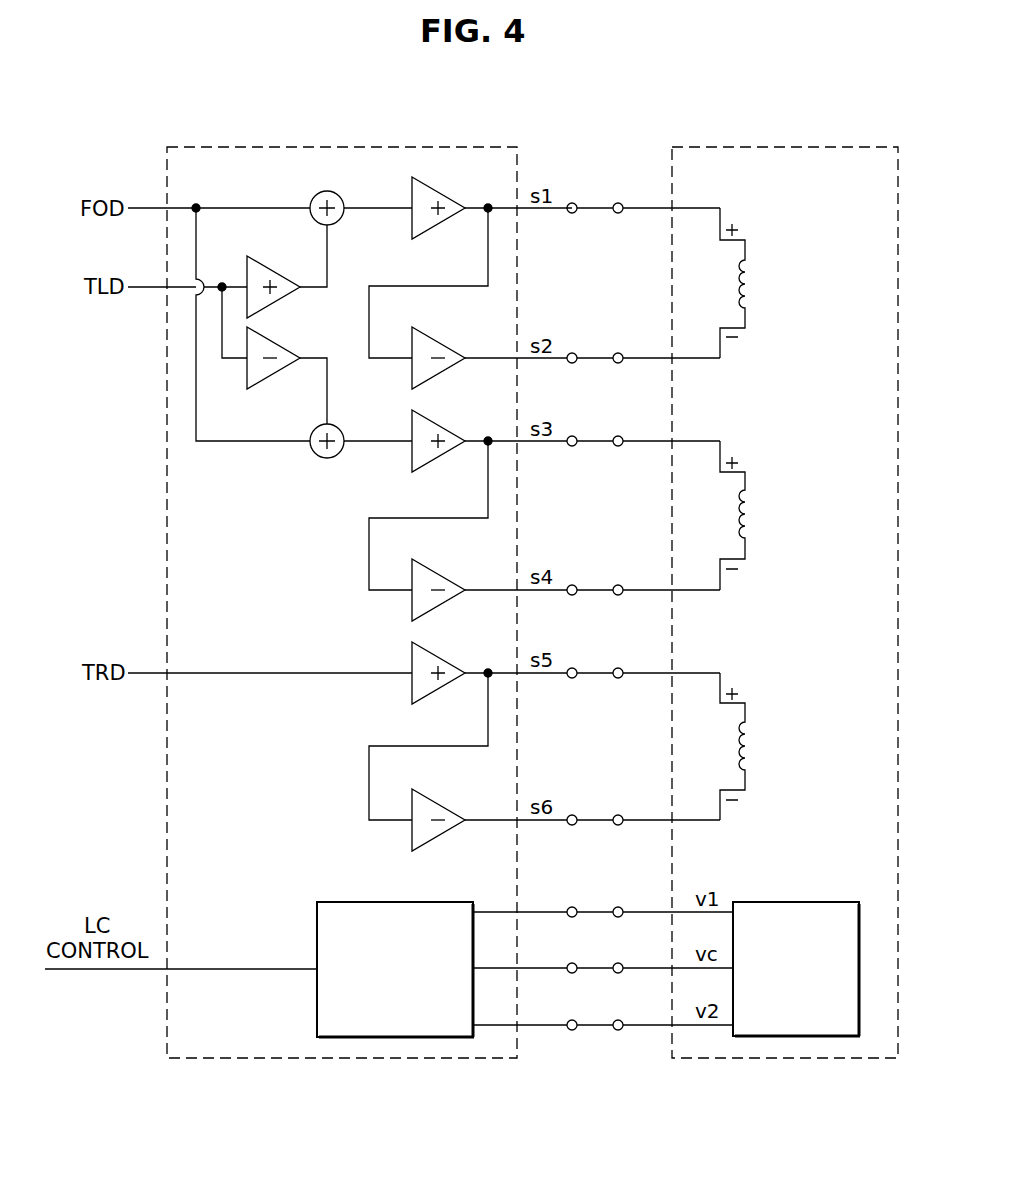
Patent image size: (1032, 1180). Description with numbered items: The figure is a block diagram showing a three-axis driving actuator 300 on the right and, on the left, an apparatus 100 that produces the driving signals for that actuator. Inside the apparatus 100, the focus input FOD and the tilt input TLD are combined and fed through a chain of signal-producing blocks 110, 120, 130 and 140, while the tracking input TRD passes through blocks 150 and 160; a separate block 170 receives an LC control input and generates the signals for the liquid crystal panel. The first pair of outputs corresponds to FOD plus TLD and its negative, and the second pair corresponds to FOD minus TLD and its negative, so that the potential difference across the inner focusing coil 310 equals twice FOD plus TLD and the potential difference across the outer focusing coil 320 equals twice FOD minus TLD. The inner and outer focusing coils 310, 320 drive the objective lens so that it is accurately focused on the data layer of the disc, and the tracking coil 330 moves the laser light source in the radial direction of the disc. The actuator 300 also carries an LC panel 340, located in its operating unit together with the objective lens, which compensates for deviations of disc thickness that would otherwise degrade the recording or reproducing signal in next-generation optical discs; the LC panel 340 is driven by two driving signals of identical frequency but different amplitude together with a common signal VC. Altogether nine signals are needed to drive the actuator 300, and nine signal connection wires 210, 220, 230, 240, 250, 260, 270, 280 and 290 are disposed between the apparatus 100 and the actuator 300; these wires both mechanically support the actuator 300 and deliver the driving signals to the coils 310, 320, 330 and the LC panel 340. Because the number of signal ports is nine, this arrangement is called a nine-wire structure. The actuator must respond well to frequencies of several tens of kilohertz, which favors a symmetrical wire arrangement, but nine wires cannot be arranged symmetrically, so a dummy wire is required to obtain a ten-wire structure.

The apparatus 100 is at (335, 146).
The first amplifier 110 is at (437, 192).
The second amplifier (inverting) 120 is at (437, 342).
The third amplifier 130 is at (437, 425).
The fourth amplifier (inverting) 140 is at (437, 574).
The fifth amplifier 150 is at (437, 657).
The sixth amplifier (inverting) 160 is at (437, 804).
The LC panel signal production unit 170 is at (398, 902).
The signal connection wire 210 is at (594, 205).
The signal connection wire 220 is at (594, 355).
The signal connection wire 230 is at (594, 438).
The signal connection wire 240 is at (594, 587).
The signal connection wire 250 is at (594, 670).
The signal connection wire 260 is at (594, 817).
The signal connection wire 270 is at (594, 909).
The signal connection wire 280 is at (594, 965).
The signal connection wire 290 is at (594, 1022).
The three-axis driving actuator 300 is at (788, 146).
The inner focusing coil 310 is at (797, 283).
The outer focusing coil 320 is at (797, 515).
The tracking coil 330 is at (797, 746).
The LC panel 340 is at (802, 902).